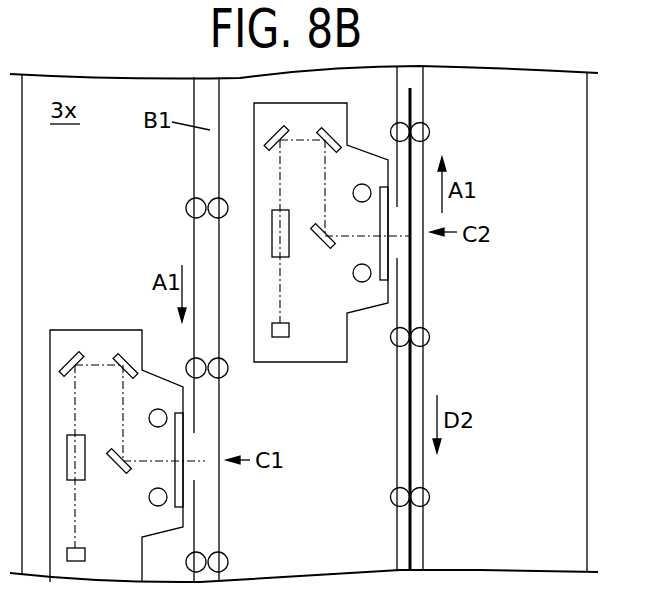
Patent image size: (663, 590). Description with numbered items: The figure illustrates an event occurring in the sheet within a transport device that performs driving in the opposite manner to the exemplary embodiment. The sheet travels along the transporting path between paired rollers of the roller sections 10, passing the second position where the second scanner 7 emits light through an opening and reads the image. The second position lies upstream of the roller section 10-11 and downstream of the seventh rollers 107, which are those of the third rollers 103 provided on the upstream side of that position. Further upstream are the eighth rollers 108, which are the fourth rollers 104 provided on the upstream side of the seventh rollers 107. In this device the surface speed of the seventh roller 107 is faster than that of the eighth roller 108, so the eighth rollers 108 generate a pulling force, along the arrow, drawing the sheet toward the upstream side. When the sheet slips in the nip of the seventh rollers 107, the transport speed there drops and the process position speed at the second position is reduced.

The second scanner 7 is at (355, 138).
The roller section 10 is at (461, 318).
The roller section 10-11 is at (437, 133).
The seventh roller 107 is at (463, 325).
The third roller 103 is at (397, 332).
The eighth roller 108 is at (467, 513).
The fourth roller 104 is at (402, 500).